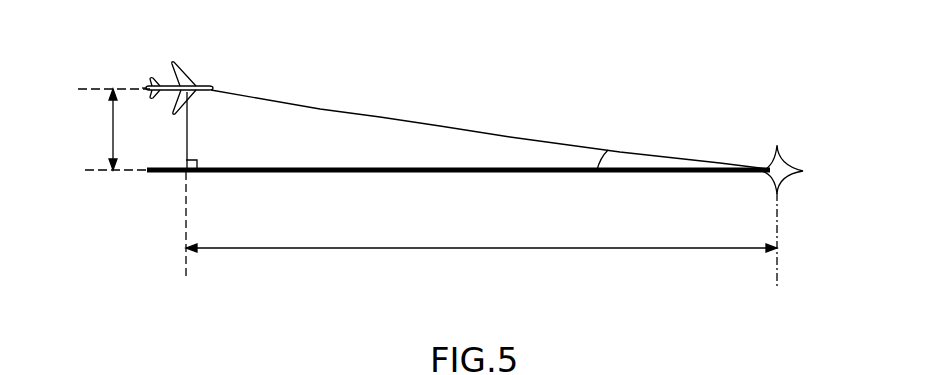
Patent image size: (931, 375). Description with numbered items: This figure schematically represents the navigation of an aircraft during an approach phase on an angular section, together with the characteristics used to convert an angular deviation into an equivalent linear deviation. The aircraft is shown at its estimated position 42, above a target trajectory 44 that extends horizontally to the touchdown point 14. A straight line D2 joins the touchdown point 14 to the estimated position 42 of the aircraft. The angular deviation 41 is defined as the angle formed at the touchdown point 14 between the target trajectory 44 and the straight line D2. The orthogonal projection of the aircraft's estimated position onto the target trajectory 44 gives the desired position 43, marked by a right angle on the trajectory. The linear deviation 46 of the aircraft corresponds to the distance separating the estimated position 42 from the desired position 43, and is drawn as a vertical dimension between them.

The touchdown point 14 is at (785, 183).
The angular deviation 41 is at (595, 156).
The estimated position 42 is at (205, 60).
The desired position 43 is at (186, 176).
The target trajectory 44 is at (360, 175).
The linear deviation 46 is at (112, 117).
The straight line D2 is at (363, 113).